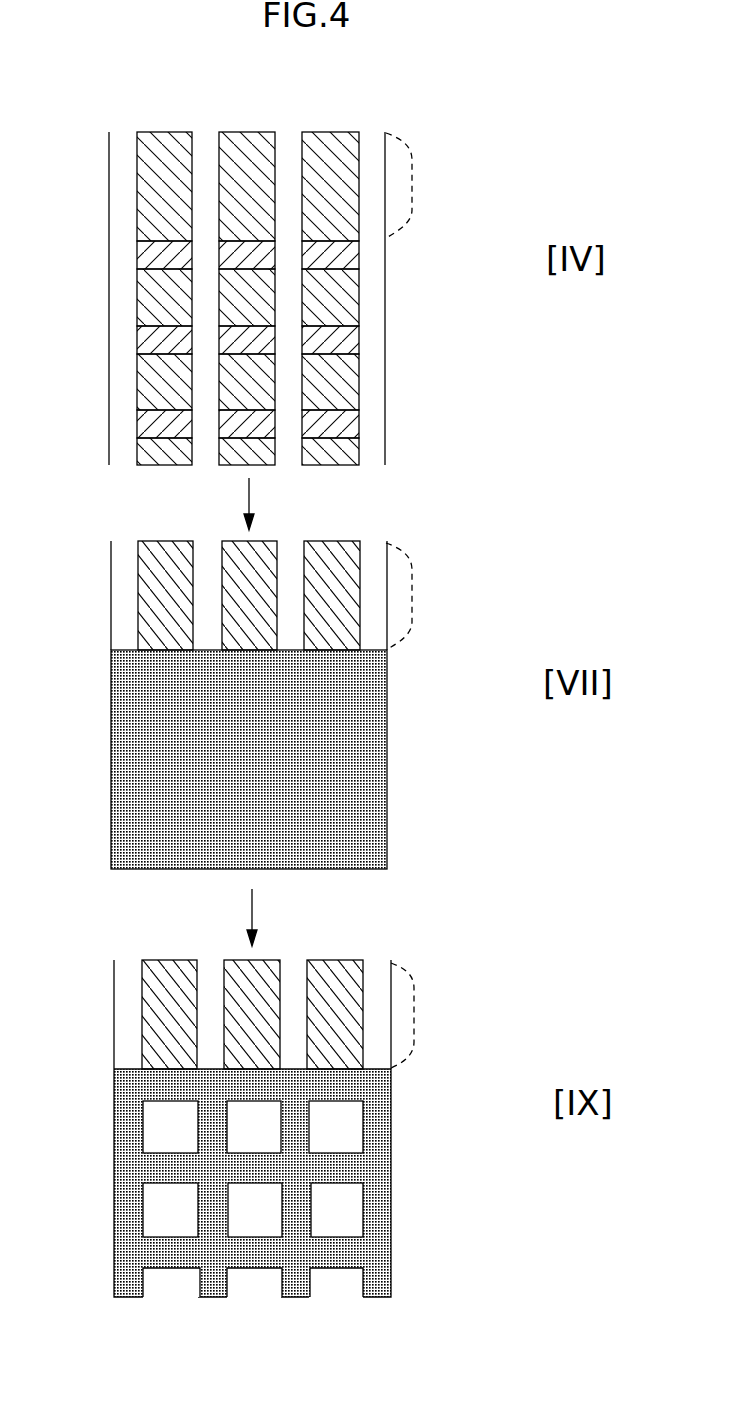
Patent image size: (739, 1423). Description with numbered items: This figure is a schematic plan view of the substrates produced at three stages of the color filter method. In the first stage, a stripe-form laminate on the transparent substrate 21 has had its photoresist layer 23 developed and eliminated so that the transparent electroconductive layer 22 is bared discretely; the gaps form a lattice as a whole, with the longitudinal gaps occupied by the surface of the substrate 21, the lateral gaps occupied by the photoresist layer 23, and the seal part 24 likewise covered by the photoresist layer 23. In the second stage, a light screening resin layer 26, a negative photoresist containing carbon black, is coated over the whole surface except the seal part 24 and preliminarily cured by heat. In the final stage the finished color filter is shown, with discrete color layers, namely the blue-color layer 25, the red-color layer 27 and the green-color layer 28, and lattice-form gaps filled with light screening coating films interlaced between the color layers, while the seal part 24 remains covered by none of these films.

The transparent substrate 21 is at (375, 137).
The transparent electroconductive layer 22 is at (343, 298).
The photoresist layer 23 is at (343, 343).
The seal part 24 is at (421, 600).
The blue-color layer 25 is at (343, 1122).
The light screening resin layer 26 is at (357, 743).
The red-color layer 27 is at (167, 1117).
The green-color layer 28 is at (244, 1141).